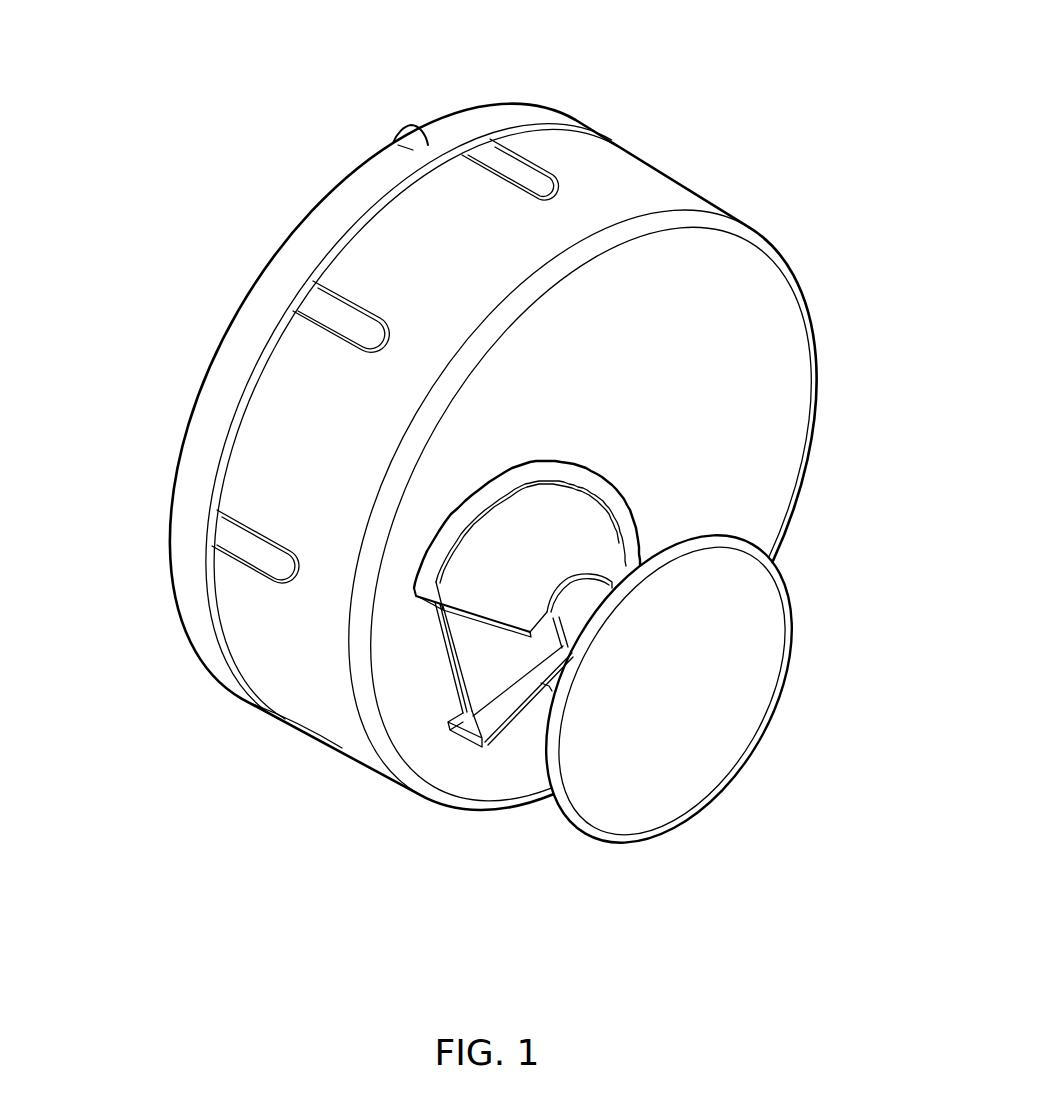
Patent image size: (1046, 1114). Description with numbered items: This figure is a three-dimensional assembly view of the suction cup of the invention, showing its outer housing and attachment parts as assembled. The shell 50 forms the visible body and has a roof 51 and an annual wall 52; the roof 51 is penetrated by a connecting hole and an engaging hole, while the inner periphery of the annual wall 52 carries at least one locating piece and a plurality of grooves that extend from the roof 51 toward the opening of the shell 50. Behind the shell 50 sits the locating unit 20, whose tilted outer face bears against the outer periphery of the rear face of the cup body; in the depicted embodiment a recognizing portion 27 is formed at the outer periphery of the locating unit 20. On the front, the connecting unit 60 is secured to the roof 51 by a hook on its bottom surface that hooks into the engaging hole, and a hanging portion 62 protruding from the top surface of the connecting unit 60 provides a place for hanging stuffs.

The locating unit 20 is at (214, 381).
The recognizing portion 27 is at (406, 130).
The shell 50 is at (345, 756).
The roof 51 is at (775, 437).
The annual wall 52 is at (657, 183).
The connecting unit 60 is at (521, 462).
The hanging portion 62 is at (727, 757).